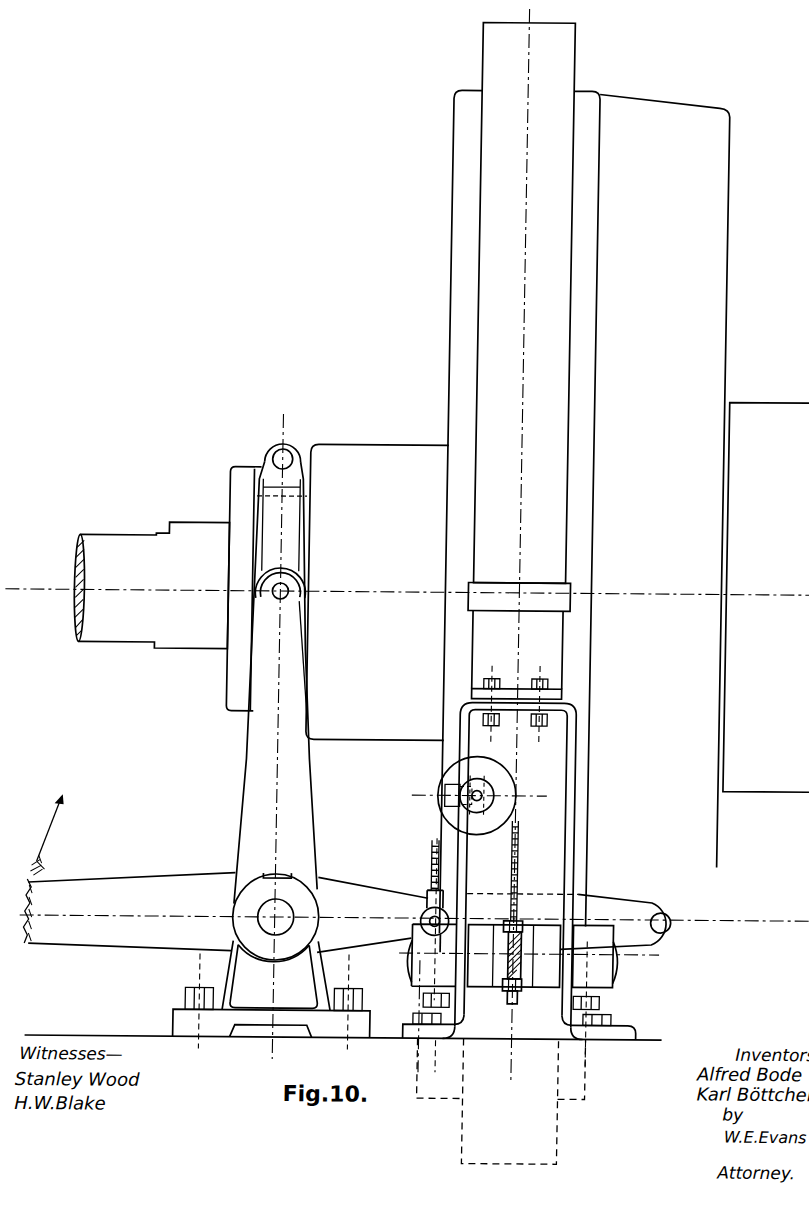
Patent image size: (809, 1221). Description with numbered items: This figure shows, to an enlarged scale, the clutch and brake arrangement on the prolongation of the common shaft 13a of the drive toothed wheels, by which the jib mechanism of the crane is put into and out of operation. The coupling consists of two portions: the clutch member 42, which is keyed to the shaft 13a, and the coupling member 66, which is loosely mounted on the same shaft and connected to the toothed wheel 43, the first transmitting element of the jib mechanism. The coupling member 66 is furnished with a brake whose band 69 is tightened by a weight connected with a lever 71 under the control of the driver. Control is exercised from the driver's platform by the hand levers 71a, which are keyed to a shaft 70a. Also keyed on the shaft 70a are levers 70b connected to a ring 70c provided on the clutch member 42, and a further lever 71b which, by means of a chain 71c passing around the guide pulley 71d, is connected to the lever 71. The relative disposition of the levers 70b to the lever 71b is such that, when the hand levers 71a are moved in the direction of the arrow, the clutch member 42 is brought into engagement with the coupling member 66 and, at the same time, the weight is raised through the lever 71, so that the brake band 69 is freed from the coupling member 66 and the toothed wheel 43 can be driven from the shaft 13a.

The common shaft 13a is at (114, 552).
The coupling member 42 is at (380, 465).
The toothed wheel 43 is at (754, 400).
The coupling member 66 is at (707, 141).
The brake band 69 is at (560, 78).
The shaft 70a is at (285, 910).
The levers 70b is at (241, 793).
The ring 70c is at (270, 458).
The lever 71 is at (517, 930).
The hand levers 71a is at (86, 883).
The lever 71b is at (385, 895).
The chain 71c is at (519, 848).
The guide pulley 71d is at (502, 783).